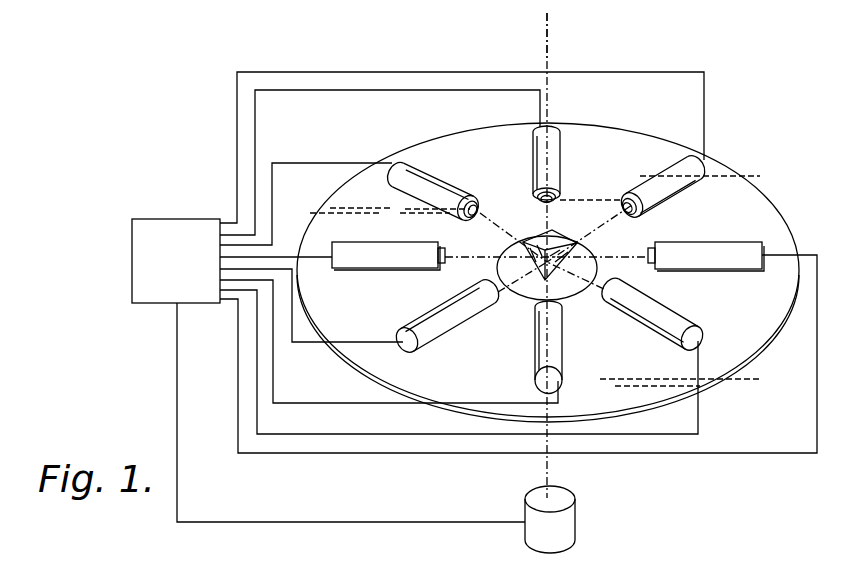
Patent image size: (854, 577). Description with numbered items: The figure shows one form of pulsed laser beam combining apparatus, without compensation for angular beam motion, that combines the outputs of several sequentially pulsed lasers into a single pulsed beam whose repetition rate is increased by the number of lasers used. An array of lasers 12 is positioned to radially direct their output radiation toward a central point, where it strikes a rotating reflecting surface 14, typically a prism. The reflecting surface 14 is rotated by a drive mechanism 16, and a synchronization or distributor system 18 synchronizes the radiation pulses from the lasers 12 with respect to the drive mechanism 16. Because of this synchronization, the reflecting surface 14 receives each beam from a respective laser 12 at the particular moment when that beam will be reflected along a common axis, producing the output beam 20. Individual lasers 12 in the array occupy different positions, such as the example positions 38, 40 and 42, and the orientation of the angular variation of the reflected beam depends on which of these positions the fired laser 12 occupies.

The lasers 12 is at (412, 178).
The rotating reflecting surface 14 is at (522, 238).
The drive mechanism 16 is at (575, 520).
The synchronization or distributor system 18 is at (190, 303).
The output beam 20 is at (548, 53).
The laser position 38 is at (617, 272).
The laser position 40 is at (523, 295).
The laser position 42 is at (437, 272).